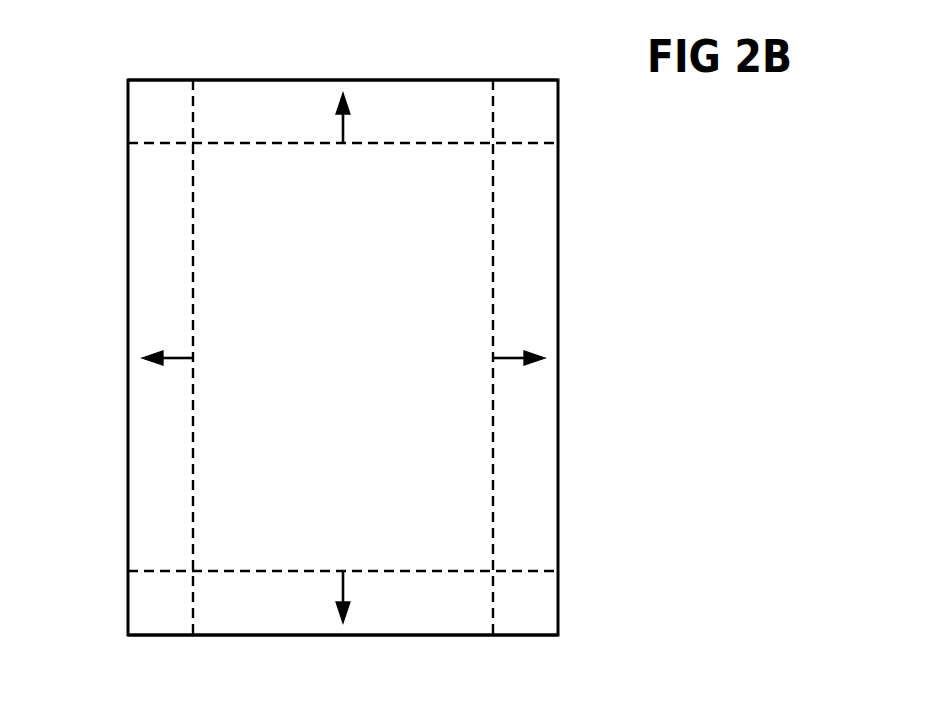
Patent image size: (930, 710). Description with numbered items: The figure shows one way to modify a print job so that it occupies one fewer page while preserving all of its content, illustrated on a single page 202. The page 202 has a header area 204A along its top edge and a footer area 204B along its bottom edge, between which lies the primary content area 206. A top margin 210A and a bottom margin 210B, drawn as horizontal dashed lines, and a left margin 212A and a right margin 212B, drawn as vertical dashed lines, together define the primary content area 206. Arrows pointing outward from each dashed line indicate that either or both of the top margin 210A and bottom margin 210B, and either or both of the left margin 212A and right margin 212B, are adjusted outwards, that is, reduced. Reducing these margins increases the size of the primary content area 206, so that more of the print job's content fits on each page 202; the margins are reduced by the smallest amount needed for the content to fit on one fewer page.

The page 202 is at (128, 102).
The header area 204A is at (433, 80).
The footer area 204B is at (442, 636).
The primary content area 206 is at (357, 367).
The top margin 210A is at (304, 144).
The bottom margin 210B is at (298, 571).
The left margin 212A is at (193, 284).
The right margin 212B is at (493, 284).